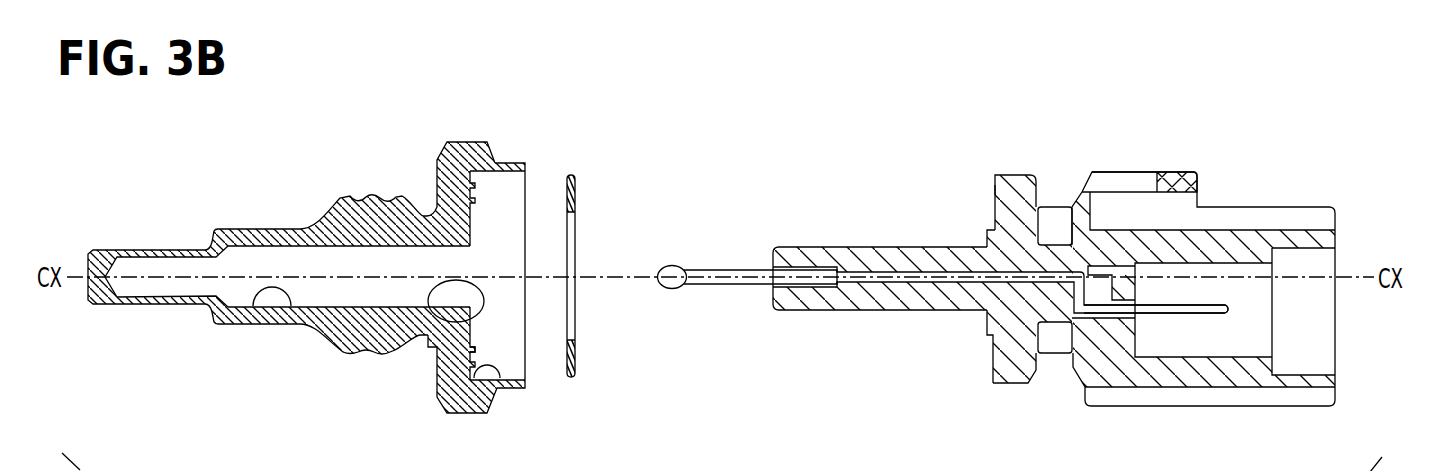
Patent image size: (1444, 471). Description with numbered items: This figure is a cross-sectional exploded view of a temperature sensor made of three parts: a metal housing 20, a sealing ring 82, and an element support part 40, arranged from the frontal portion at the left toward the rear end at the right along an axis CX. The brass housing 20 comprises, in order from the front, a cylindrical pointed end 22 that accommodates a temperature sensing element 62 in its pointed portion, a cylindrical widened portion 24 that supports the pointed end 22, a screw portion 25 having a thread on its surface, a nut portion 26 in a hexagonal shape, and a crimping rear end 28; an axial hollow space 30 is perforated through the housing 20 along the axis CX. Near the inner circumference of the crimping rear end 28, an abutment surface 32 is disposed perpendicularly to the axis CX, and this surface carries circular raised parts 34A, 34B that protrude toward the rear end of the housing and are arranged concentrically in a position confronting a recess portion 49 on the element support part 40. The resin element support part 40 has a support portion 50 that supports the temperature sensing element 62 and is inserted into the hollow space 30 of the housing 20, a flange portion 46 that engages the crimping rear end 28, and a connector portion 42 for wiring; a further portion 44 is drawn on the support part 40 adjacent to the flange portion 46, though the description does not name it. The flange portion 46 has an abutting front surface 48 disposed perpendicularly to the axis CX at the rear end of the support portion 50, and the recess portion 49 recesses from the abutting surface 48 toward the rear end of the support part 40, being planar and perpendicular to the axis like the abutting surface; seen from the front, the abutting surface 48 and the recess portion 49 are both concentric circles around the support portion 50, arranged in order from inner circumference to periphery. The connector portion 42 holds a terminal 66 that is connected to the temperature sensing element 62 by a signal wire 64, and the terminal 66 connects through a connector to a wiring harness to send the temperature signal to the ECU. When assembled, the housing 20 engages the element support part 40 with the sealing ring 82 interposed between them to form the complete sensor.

The metal housing 20 is at (176, 204).
The cylindrical pointed end 22 is at (123, 250).
The cylindrical widened portion 24 is at (243, 229).
The screw portion 25 is at (340, 197).
The nut portion 26 is at (470, 142).
The crimping rear end 28 is at (517, 163).
The axial hollow space 30 is at (289, 320).
The abutment surface 32 is at (430, 320).
The circular raised part 34A is at (482, 352).
The circular raised part 34B is at (498, 386).
The element support part 40 is at (1147, 149).
The connector portion 42 is at (1188, 172).
The nut 44 is at (1053, 207).
The flange portion 46 is at (1011, 175).
The abutting front surface 48 is at (987, 233).
The recess portion 49 is at (995, 190).
The support portion 50 is at (832, 247).
The temperature sensing element 62 is at (677, 289).
The signal wire 64 is at (838, 311).
The terminal 66 is at (1210, 305).
The sealing ring 82 is at (576, 178).